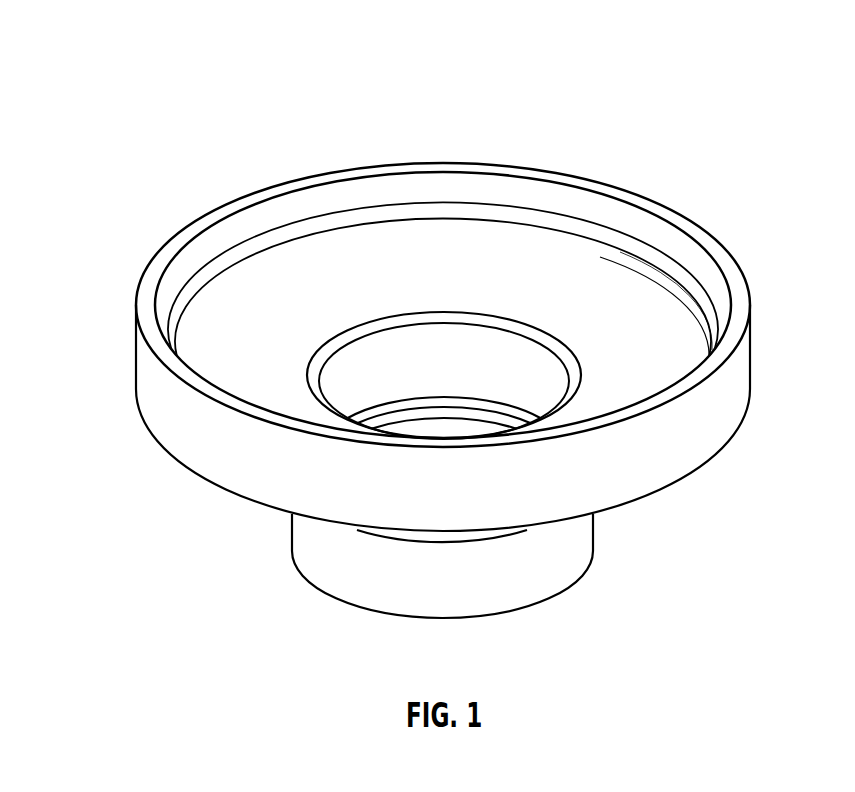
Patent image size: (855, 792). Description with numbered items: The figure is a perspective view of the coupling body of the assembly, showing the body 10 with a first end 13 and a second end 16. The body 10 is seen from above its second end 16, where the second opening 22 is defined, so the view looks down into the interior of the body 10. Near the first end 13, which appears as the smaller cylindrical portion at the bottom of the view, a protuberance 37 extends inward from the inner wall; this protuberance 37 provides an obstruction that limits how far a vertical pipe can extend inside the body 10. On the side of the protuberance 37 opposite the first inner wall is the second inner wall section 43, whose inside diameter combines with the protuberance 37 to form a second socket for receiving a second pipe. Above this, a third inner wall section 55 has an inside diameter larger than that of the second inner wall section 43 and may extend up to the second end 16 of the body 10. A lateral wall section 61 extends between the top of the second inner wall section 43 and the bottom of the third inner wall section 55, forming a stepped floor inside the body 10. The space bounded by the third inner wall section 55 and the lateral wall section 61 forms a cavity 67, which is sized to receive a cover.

The body 10 is at (136, 44).
The first end 13 is at (425, 618).
The second end 16 is at (282, 182).
The second opening 22 is at (206, 260).
The protuberance 37 is at (433, 277).
The second inner wall section 43 is at (444, 275).
The third inner wall section 55 is at (466, 210).
The lateral wall section 61 is at (652, 317).
The cavity 67 is at (572, 274).